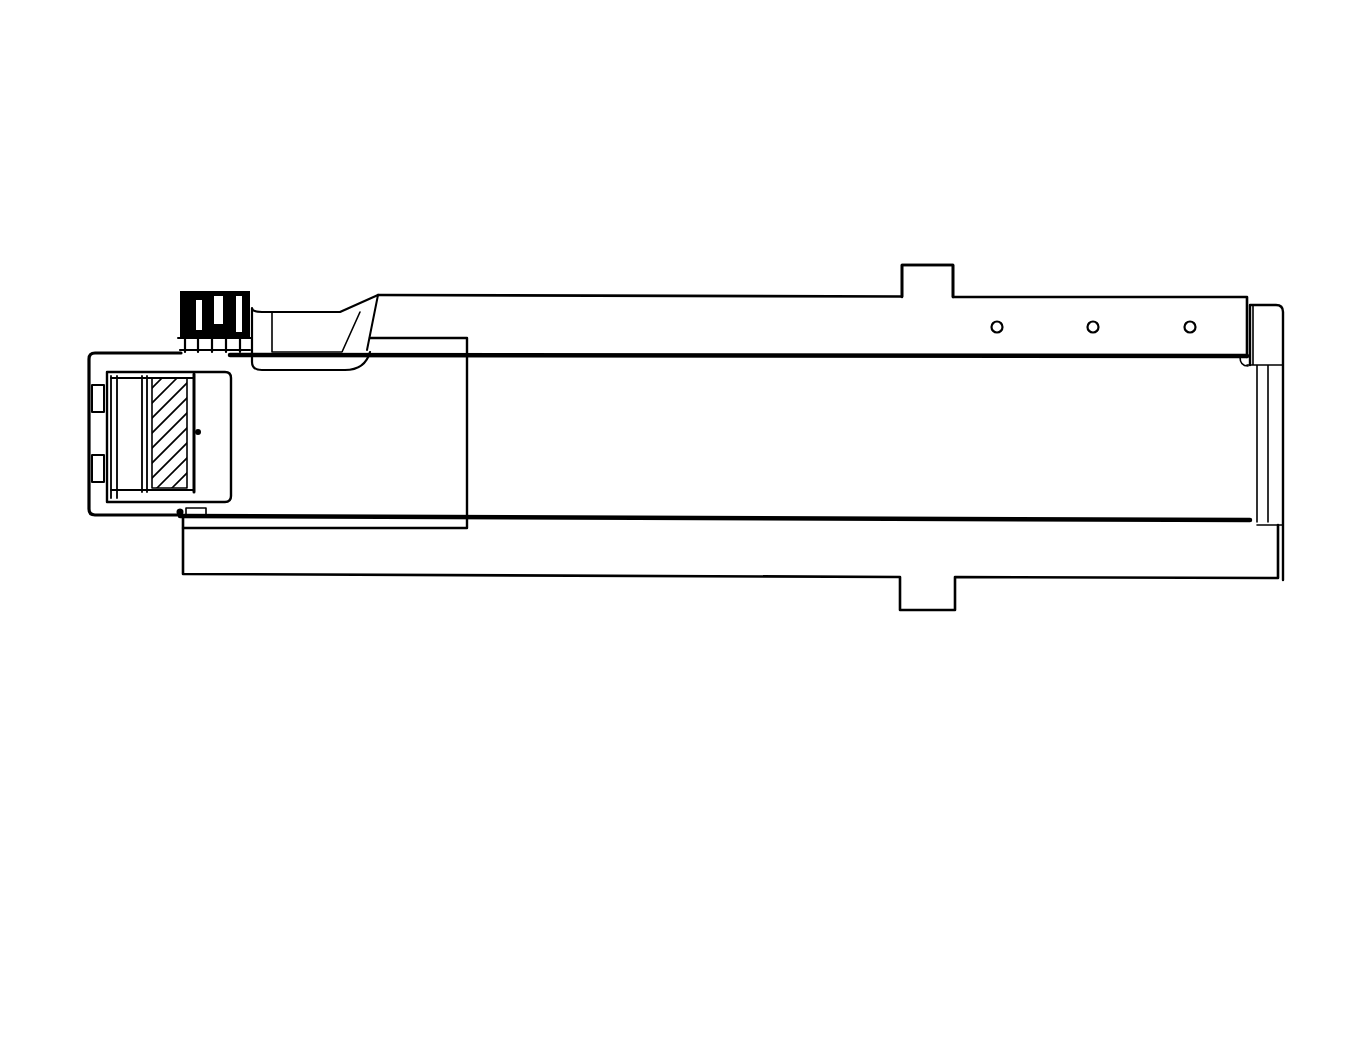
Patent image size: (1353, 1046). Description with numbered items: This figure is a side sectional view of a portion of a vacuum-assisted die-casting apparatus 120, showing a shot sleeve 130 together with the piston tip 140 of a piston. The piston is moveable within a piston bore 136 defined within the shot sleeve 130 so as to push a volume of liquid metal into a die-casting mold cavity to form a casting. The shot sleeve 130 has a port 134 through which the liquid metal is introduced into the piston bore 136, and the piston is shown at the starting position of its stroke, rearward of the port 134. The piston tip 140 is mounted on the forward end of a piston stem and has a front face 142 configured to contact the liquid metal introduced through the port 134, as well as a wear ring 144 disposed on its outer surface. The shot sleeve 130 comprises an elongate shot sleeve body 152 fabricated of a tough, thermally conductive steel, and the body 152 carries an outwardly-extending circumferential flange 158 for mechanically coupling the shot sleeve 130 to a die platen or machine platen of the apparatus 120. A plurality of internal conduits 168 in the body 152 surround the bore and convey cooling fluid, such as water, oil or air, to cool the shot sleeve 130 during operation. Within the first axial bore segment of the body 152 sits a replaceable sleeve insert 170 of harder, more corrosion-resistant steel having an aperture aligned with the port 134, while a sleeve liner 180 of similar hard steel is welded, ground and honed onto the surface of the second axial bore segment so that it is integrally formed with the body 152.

The vacuum-assisted die-casting apparatus 120 is at (1154, 130).
The shot sleeve 130 is at (644, 240).
The port 134 is at (314, 296).
The piston bore 136 is at (1218, 440).
The piston tip 140 is at (140, 352).
The front face 142 is at (240, 471).
The wear ring 144 is at (200, 521).
The shot sleeve body 152 is at (811, 305).
The circumferential flange 158 is at (931, 278).
The internal conduits 168 is at (1180, 317).
The sleeve insert 170 is at (410, 525).
The sleeve liner 180 is at (768, 523).